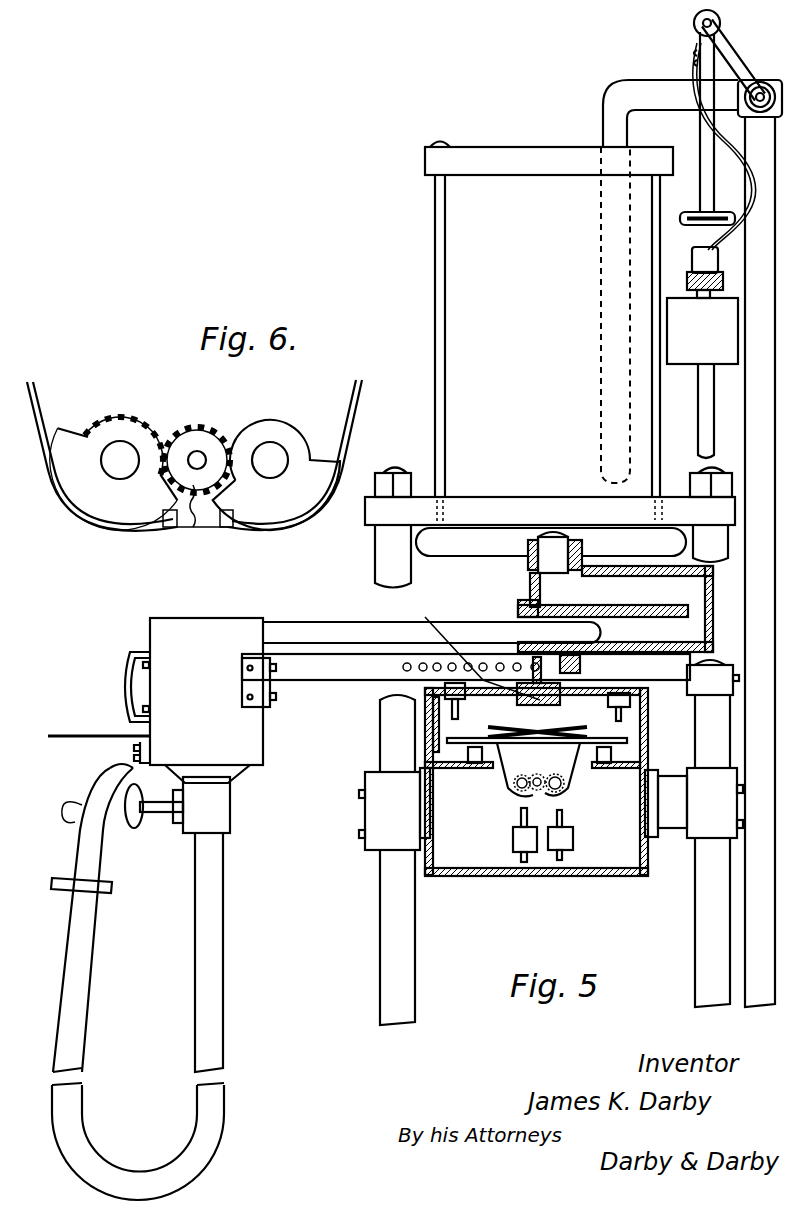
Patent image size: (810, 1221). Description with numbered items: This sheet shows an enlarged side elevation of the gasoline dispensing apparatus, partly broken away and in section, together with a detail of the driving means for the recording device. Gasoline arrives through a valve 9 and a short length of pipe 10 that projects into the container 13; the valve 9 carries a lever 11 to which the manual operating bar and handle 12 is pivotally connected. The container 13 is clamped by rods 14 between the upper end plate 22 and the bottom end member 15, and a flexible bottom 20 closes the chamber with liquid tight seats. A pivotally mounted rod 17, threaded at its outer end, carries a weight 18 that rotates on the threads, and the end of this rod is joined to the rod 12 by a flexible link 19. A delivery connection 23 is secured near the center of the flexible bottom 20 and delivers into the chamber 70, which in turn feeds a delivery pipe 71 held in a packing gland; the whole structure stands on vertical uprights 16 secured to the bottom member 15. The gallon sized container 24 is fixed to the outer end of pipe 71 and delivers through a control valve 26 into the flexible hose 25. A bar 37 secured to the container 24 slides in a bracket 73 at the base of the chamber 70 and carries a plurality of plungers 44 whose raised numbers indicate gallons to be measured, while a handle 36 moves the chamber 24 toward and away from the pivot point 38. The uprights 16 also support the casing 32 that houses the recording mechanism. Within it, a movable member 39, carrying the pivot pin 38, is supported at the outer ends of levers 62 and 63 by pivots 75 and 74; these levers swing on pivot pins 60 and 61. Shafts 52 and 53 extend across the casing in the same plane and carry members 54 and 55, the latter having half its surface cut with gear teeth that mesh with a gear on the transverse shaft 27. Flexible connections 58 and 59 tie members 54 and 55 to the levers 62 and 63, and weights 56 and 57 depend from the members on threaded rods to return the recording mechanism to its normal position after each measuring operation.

In FIG. 5, the valve 9 is at (766, 82).
In FIG. 5, the short length of pipe 10 is at (593, 261).
In FIG. 5, the lever 11 is at (732, 56).
In FIG. 5, the manual operating bar and handle 12 is at (700, 184).
In FIG. 5, the container 13 is at (453, 255).
In FIG. 5, the rods 14 is at (425, 310).
In FIG. 5, the end member 15 is at (378, 530).
In FIG. 5, the vertical uprights 16 is at (385, 572).
In FIG. 5, the rod 17 is at (700, 410).
In FIG. 5, the weight 18 is at (678, 340).
In FIG. 5, the flexible link 19 is at (690, 90).
In FIG. 5, the flexible bottom 20 is at (488, 560).
In FIG. 5, the upper end plate 22 is at (526, 156).
In FIG. 5, the delivery connection 23 is at (535, 540).
In FIG. 5, the chamber or container 24 is at (256, 745).
In FIG. 5, the flexible hose 25 is at (216, 940).
In FIG. 5, the control valve 26 is at (222, 812).
In FIG. 6, the shaft 27 is at (200, 450).
In FIG. 5, the shaft 27 is at (538, 774).
In FIG. 5, the container or casing 32 is at (640, 882).
In FIG. 5, the handle 36 is at (124, 708).
In FIG. 5, the bar or rod 37 is at (372, 670).
In FIG. 5, the pivot pin or member 38 is at (471, 648).
In FIG. 5, the movable member 39 is at (689, 712).
In FIG. 5, the plungers 44 is at (418, 676).
In FIG. 6, the short pivot rod 52 is at (277, 450).
In FIG. 5, the short pivot rod 52 is at (559, 777).
In FIG. 6, the short pivot rod 53 is at (123, 450).
In FIG. 5, the short pivot rod 53 is at (517, 775).
In FIG. 6, the member 54 is at (282, 520).
In FIG. 5, the member 54 is at (568, 795).
In FIG. 6, the member 55 is at (95, 513).
In FIG. 5, the member 55 is at (518, 797).
In FIG. 5, the weight 56 is at (512, 843).
In FIG. 5, the weight 57 is at (578, 841).
In FIG. 6, the flexible connection 58 is at (352, 440).
In FIG. 5, the flexible connection 58 is at (577, 773).
In FIG. 6, the flexible connection 59 is at (40, 410).
In FIG. 5, the flexible connection 59 is at (500, 777).
In FIG. 5, the pivot pin 60 is at (640, 750).
In FIG. 5, the pivot pin 61 is at (402, 757).
In FIG. 5, the lever 62 is at (537, 721).
In FIG. 5, the lever 63 is at (537, 721).
In FIG. 5, the chamber 70 is at (668, 575).
In FIG. 5, the delivery pipe 71 is at (432, 617).
In FIG. 5, the bracket 73 is at (578, 665).
In FIG. 5, the pivot 74 is at (460, 722).
In FIG. 5, the pivot 75 is at (614, 716).